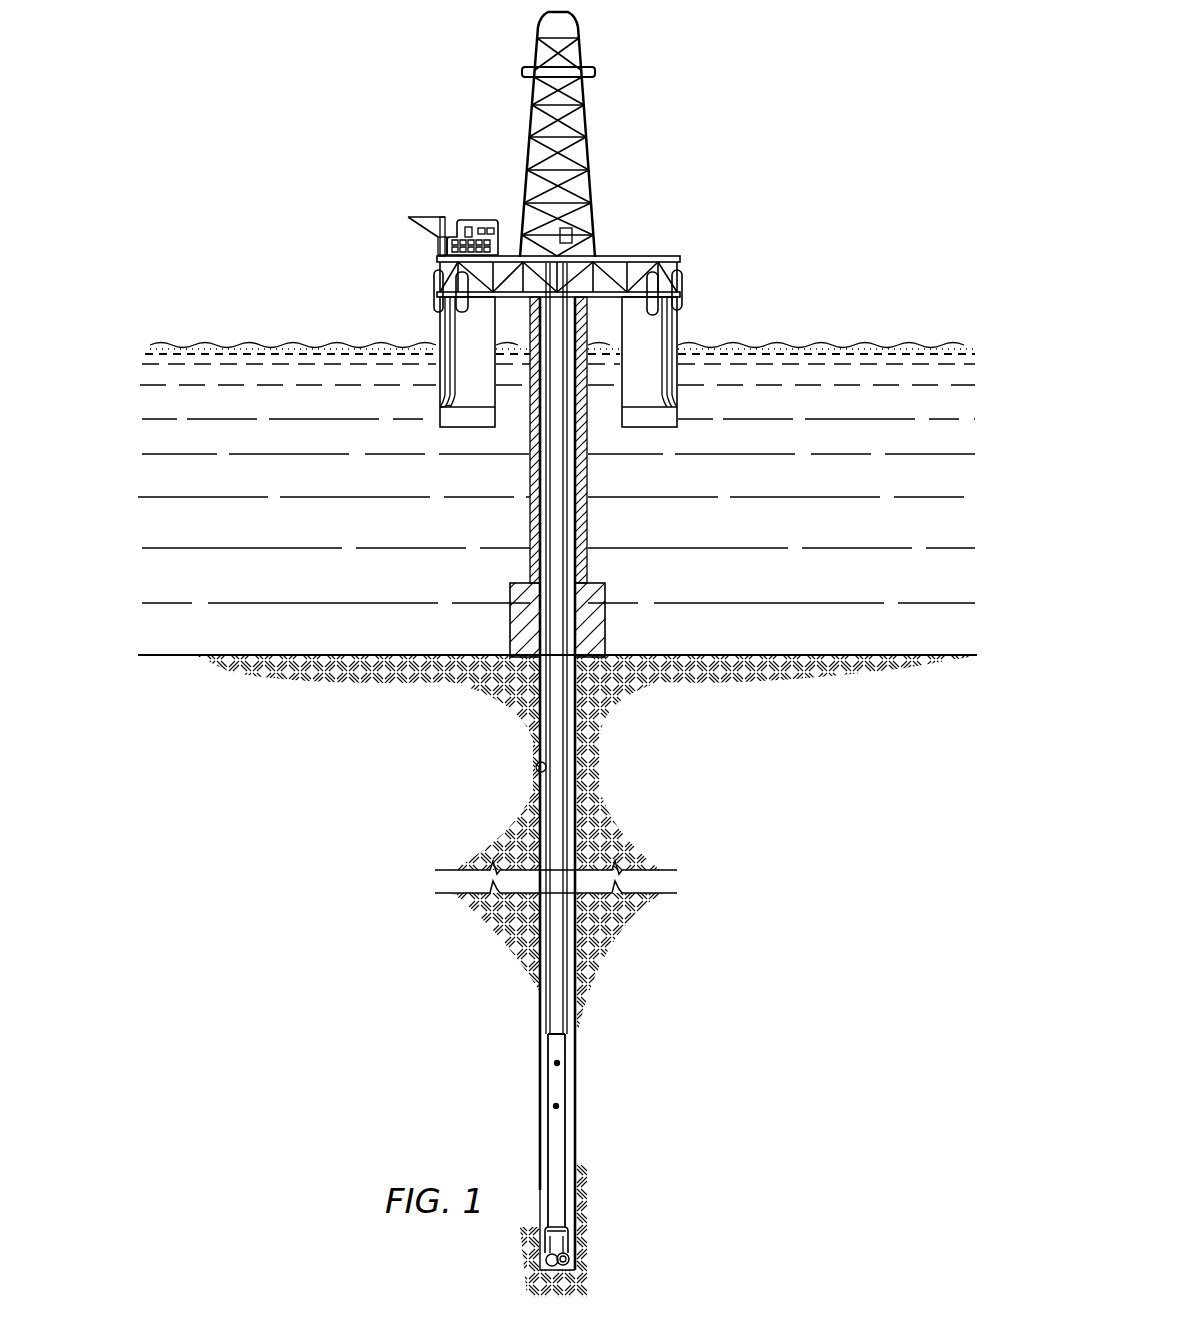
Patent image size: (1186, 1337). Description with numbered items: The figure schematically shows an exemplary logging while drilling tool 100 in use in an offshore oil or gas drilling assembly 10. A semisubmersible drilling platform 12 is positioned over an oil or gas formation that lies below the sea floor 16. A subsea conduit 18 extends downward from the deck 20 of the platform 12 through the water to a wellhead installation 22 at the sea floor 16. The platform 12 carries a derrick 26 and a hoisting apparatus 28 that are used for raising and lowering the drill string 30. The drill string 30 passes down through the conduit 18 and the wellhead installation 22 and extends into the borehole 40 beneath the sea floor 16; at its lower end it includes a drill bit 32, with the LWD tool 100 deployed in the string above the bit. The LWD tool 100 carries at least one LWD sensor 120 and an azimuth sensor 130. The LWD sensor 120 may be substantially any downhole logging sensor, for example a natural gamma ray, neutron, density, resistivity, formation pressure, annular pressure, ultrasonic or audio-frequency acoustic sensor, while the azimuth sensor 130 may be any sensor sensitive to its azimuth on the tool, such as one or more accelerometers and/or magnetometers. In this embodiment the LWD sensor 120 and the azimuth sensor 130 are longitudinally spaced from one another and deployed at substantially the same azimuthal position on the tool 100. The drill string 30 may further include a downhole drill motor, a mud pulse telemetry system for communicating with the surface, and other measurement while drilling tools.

The offshore oil or gas drilling assembly 10 is at (663, 144).
The semisubmersible drilling platform 12 is at (667, 258).
The sea floor 16 is at (836, 656).
The subsea conduit 18 is at (588, 523).
The deck 20 is at (683, 293).
The wellhead installation 22 is at (588, 583).
The derrick 26 is at (560, 240).
The hoisting apparatus 28 is at (581, 55).
The drill string 30 is at (558, 442).
The drill bit 32 is at (571, 1262).
The borehole 40 is at (536, 765).
The logging while drilling tool 100 is at (557, 1078).
The LWD sensor 120 is at (560, 1106).
The azimuth sensor 130 is at (553, 1063).